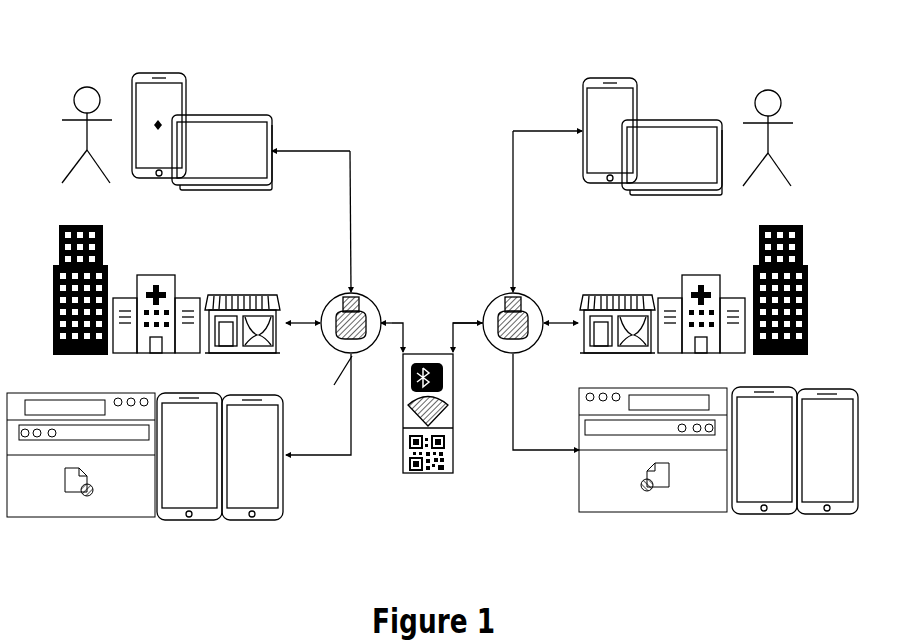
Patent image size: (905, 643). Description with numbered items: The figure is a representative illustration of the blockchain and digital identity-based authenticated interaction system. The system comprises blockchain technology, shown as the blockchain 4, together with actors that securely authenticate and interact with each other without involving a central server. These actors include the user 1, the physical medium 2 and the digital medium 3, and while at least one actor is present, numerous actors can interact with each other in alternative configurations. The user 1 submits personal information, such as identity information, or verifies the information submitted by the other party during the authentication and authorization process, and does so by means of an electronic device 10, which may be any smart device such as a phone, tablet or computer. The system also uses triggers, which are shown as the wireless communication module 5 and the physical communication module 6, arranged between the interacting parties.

The user 1 is at (96, 57).
The electronic device 10 is at (252, 83).
The physical medium 2 is at (270, 265).
The digital medium 3 is at (252, 385).
The blockchain 4 is at (366, 292).
The wireless communication module 5 is at (440, 395).
The physical communication module 6 is at (447, 432).